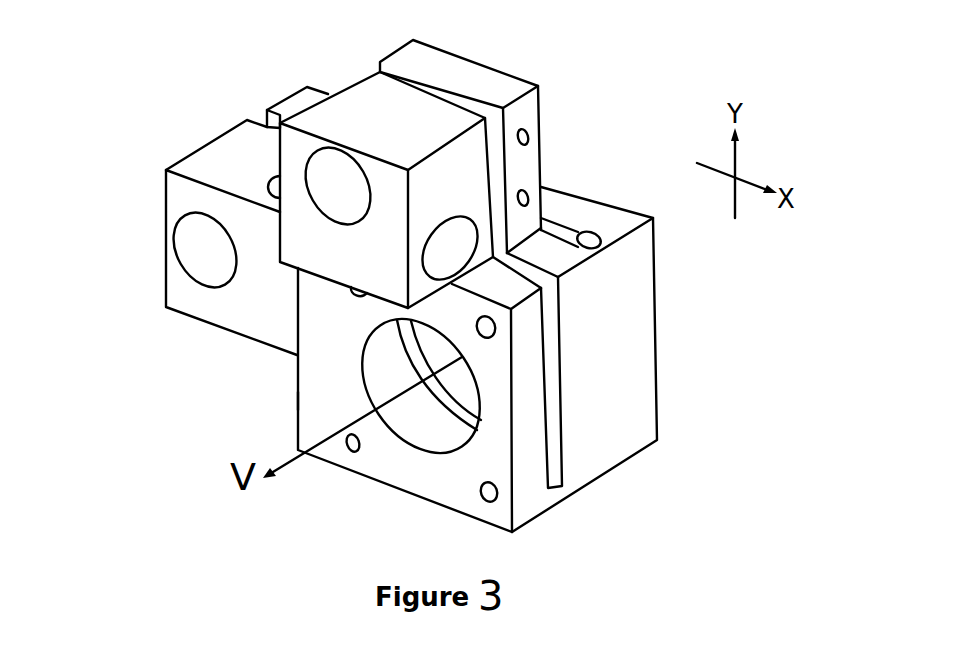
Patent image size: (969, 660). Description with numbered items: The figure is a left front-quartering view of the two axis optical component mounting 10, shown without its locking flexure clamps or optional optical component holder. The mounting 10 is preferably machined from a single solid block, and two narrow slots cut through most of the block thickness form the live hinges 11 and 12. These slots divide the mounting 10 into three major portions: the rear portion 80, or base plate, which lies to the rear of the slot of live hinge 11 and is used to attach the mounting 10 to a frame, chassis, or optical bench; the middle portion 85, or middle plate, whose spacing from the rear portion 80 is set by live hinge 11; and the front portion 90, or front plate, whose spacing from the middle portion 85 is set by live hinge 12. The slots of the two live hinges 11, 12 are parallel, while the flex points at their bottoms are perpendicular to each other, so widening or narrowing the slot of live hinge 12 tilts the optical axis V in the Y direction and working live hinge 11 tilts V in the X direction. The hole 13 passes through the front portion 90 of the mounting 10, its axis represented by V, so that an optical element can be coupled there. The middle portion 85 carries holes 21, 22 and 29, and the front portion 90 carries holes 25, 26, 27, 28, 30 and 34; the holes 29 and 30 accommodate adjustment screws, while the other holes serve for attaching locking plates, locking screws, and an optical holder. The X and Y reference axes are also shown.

The optical component mounting 10 is at (642, 312).
The live hinge 11 is at (263, 113).
The live hinge 12 is at (373, 62).
The hole 13 is at (435, 428).
The hole 21 is at (529, 132).
The hole 22 is at (528, 194).
The hole 25 is at (352, 303).
The hole 26 is at (352, 453).
The hole 27 is at (481, 500).
The hole 28 is at (490, 338).
The hole 29 is at (187, 247).
The hole 30 is at (350, 206).
The hole 34 is at (462, 220).
The rear portion 80 is at (580, 233).
The middle portion 85 is at (470, 67).
The front portion 90 is at (298, 402).